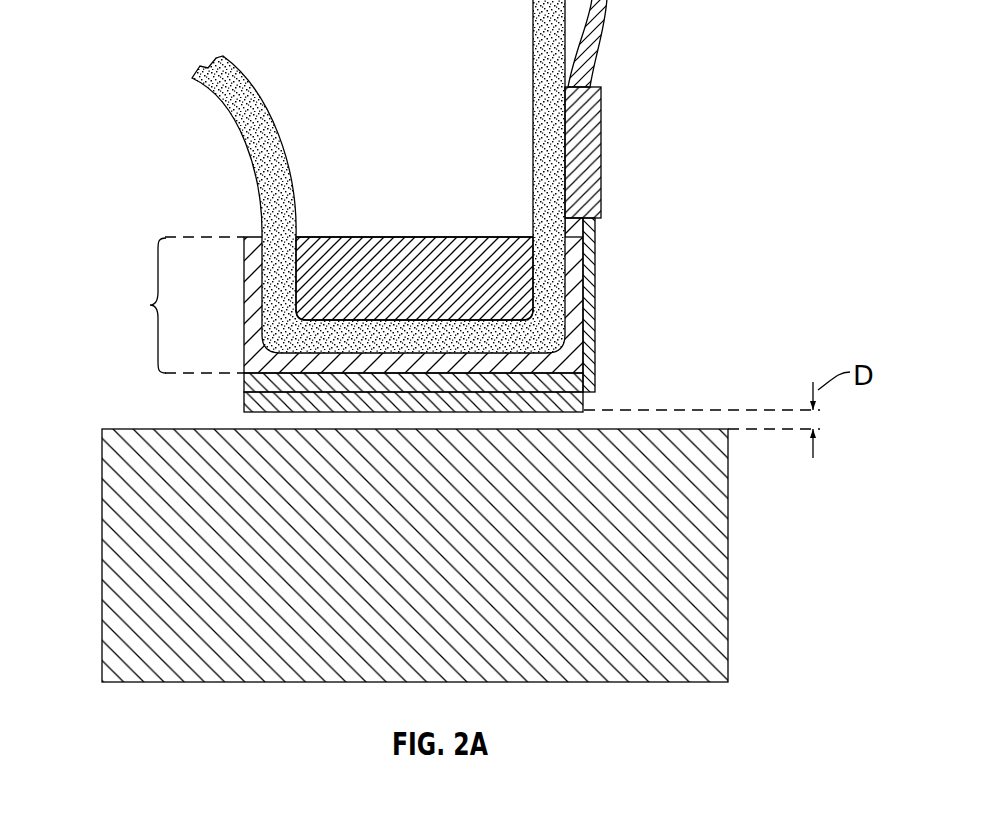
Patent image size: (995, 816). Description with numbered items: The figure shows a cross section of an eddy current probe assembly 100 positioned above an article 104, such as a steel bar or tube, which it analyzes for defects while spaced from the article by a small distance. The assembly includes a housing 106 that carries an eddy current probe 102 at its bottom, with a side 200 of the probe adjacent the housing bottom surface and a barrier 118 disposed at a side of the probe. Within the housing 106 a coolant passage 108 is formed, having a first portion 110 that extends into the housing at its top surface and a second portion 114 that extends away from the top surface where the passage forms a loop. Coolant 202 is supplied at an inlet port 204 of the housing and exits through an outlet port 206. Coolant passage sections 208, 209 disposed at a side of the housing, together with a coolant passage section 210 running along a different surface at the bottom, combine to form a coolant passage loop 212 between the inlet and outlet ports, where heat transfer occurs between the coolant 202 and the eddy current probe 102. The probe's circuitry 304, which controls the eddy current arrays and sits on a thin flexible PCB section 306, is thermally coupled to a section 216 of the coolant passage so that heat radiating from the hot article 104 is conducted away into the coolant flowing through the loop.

The eddy current probe assembly 100 is at (120, 193).
The eddy current probe 102 is at (260, 377).
The article 104 is at (721, 560).
The housing 106 is at (580, 352).
The coolant passage 108 is at (287, 268).
The first portion 110 is at (590, 33).
The second portion 114 is at (258, 95).
The barrier 118 is at (257, 402).
The side 200 is at (485, 373).
The coolant 202 is at (216, 91).
The inlet port 204 is at (567, 228).
The outlet port 206 is at (262, 236).
The coolant passage section 208 is at (568, 323).
The coolant passage section 209 is at (263, 303).
The coolant passage section 210 is at (517, 352).
The coolant passage loop 212 is at (175, 305).
The section 216 is at (566, 118).
The circuitry 304 is at (588, 125).
The flexible PCB section 306 is at (595, 289).